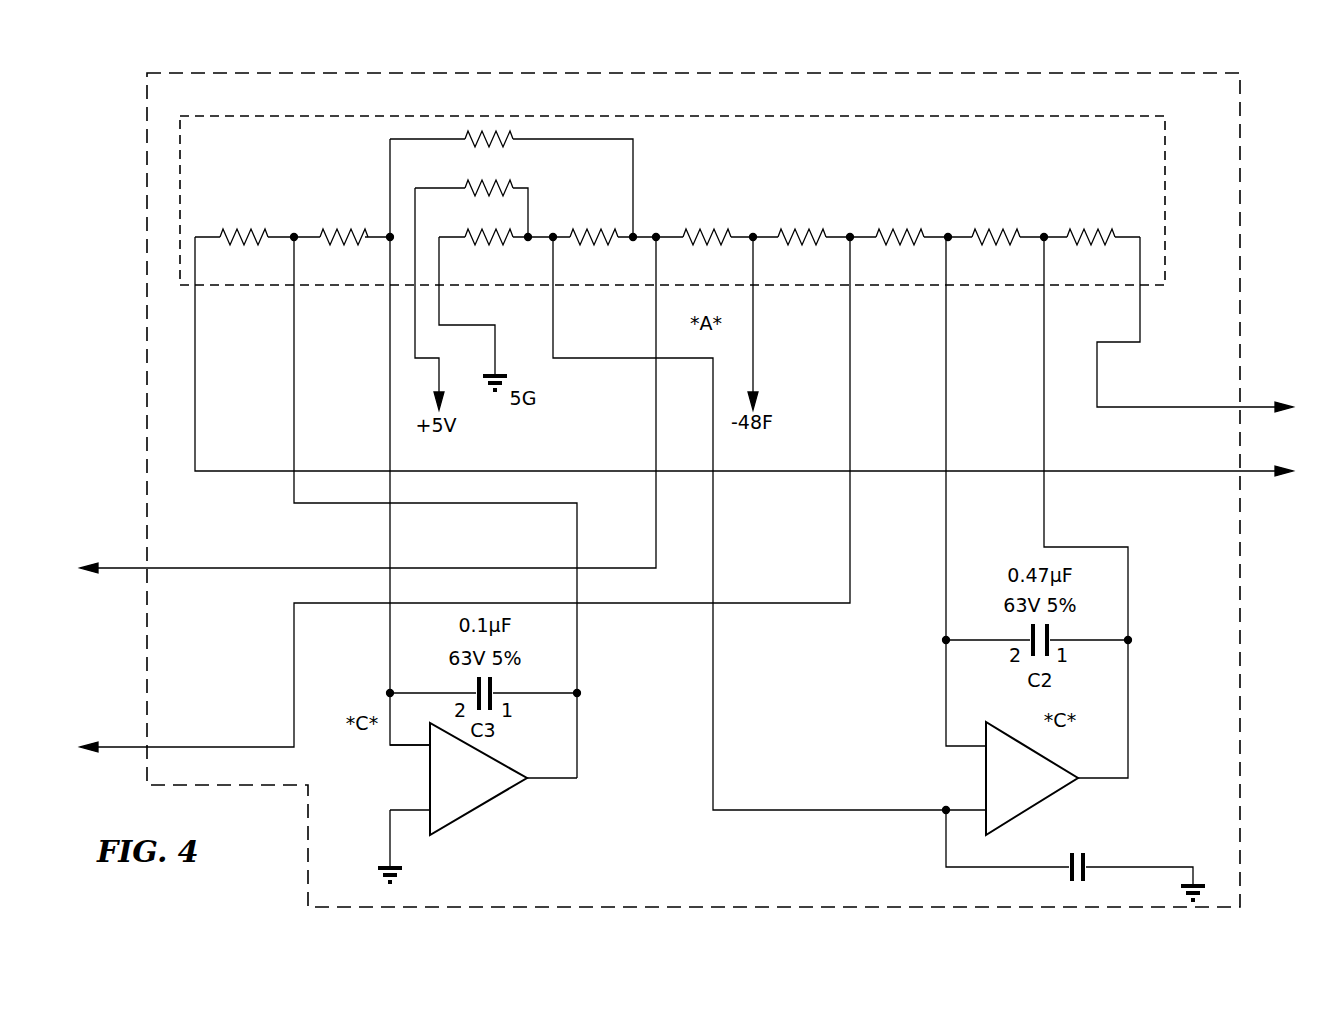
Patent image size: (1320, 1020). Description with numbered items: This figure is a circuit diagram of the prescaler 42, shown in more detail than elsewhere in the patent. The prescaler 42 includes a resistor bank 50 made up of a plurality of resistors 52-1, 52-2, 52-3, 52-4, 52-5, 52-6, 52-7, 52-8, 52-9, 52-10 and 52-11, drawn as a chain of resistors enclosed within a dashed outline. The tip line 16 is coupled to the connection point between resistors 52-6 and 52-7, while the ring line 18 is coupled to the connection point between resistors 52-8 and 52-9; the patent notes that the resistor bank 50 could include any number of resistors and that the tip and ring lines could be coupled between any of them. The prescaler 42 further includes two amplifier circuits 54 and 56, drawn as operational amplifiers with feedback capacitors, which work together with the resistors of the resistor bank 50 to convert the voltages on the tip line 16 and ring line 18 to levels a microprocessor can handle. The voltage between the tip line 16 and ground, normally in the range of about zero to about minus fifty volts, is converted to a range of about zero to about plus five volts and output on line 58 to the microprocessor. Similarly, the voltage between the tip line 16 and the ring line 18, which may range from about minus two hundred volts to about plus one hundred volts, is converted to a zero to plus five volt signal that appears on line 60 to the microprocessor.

The tip line 16 is at (122, 564).
The ring line 18 is at (124, 743).
The prescaler 42 is at (1240, 550).
The resistor bank 50 is at (1165, 270).
The resistor 52-1 is at (240, 230).
The resistor 52-2 is at (336, 230).
The resistor 52-3 is at (512, 143).
The resistor 52-4 is at (512, 186).
The resistor 52-5 is at (497, 246).
The resistor 52-6 is at (594, 246).
The resistor 52-7 is at (704, 230).
The resistor 52-8 is at (800, 230).
The resistor 52-9 is at (893, 230).
The resistor 52-10 is at (994, 230).
The resistor 52-11 is at (1087, 230).
The amplifier circuit 54 is at (475, 822).
The amplifier circuit 56 is at (935, 815).
The line 58 is at (197, 342).
The line 60 is at (1097, 378).